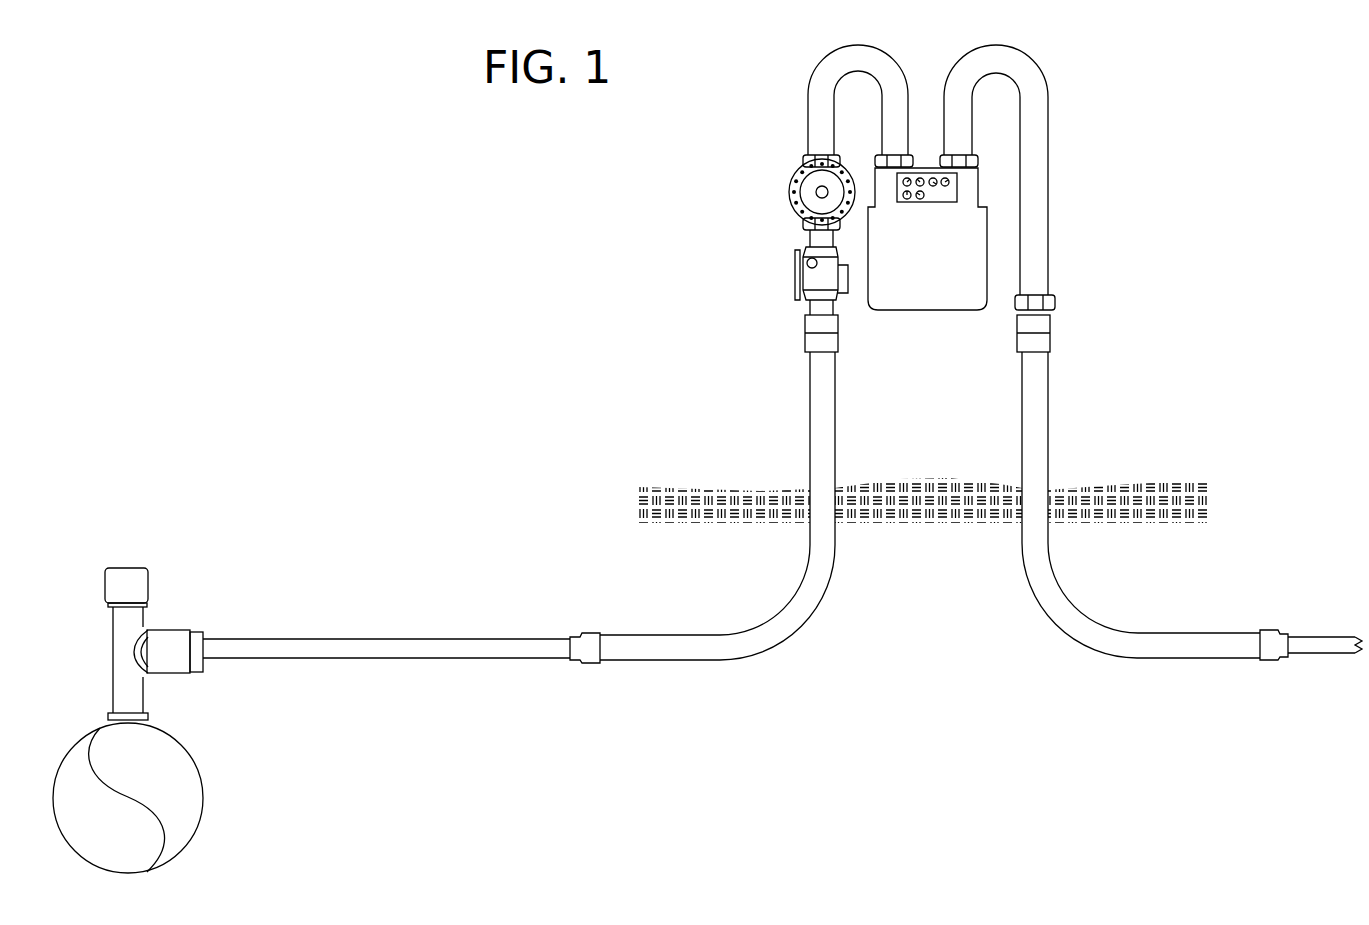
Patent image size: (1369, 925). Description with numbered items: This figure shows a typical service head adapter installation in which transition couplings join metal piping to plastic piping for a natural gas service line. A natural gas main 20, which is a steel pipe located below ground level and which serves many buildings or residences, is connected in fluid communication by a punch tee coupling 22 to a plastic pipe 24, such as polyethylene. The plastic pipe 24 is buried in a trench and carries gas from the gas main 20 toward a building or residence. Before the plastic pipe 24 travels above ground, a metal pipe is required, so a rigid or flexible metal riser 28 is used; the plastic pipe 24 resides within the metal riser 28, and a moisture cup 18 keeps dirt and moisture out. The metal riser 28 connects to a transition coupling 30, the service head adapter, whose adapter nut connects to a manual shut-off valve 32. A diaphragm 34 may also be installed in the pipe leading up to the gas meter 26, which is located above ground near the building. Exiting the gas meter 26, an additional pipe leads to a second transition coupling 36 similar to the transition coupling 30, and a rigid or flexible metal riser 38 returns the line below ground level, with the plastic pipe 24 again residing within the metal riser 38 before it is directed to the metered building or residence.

The moisture cup 18 is at (593, 663).
The natural gas main 20 is at (180, 755).
The punch tee coupling 22 is at (133, 618).
The plastic pipe 24 is at (355, 643).
The gas meter 26 is at (970, 247).
The metal riser 28 is at (832, 430).
The transition coupling 30 is at (807, 325).
The manual shut-off valve 32 is at (787, 288).
The diaphragm 34 is at (790, 202).
The transition coupling 36 is at (1047, 325).
The metal riser 38 is at (1043, 437).